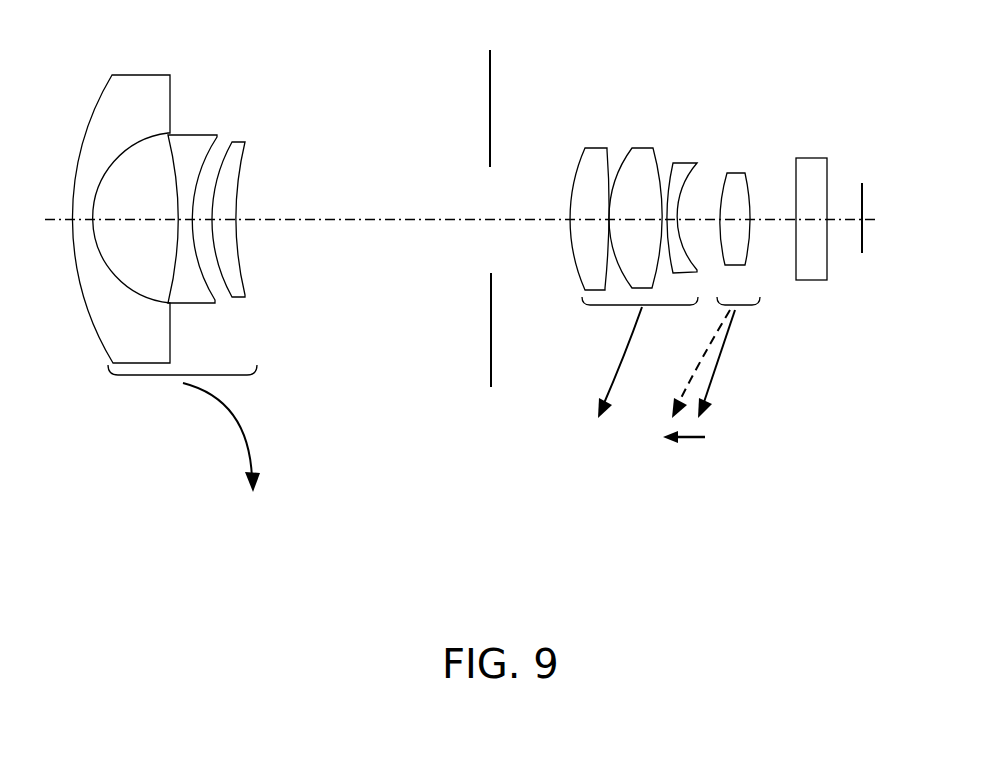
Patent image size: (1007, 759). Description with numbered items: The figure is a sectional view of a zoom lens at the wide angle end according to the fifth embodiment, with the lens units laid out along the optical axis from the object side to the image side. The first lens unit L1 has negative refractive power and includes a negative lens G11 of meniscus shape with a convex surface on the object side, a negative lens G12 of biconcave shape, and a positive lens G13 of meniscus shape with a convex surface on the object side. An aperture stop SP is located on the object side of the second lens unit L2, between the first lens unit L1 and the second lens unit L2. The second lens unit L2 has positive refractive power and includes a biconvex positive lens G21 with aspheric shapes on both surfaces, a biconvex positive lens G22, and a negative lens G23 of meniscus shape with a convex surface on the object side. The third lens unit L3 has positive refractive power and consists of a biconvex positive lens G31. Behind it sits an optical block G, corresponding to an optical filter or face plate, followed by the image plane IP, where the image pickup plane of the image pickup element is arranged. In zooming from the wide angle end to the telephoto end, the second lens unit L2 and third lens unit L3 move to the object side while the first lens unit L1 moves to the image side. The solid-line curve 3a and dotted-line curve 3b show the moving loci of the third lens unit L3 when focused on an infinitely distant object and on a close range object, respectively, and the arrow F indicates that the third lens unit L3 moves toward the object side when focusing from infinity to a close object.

The first lens unit L1 is at (255, 40).
The negative lens G11 is at (150, 83).
The negative lens G12 is at (193, 140).
The positive lens G13 is at (235, 160).
The aperture stop SP is at (488, 50).
The second lens unit L2 is at (717, 83).
The positive lens G21 is at (598, 160).
The positive lens G22 is at (643, 170).
The negative lens G23 is at (682, 183).
The third lens unit L3 is at (812, 83).
The biconvex positive lens G31 is at (737, 187).
The optical block G is at (827, 157).
The image plane IP is at (863, 182).
The curve (solid line) 3a is at (721, 364).
The curve (dotted line) 3b is at (694, 364).
The arrow F is at (684, 449).